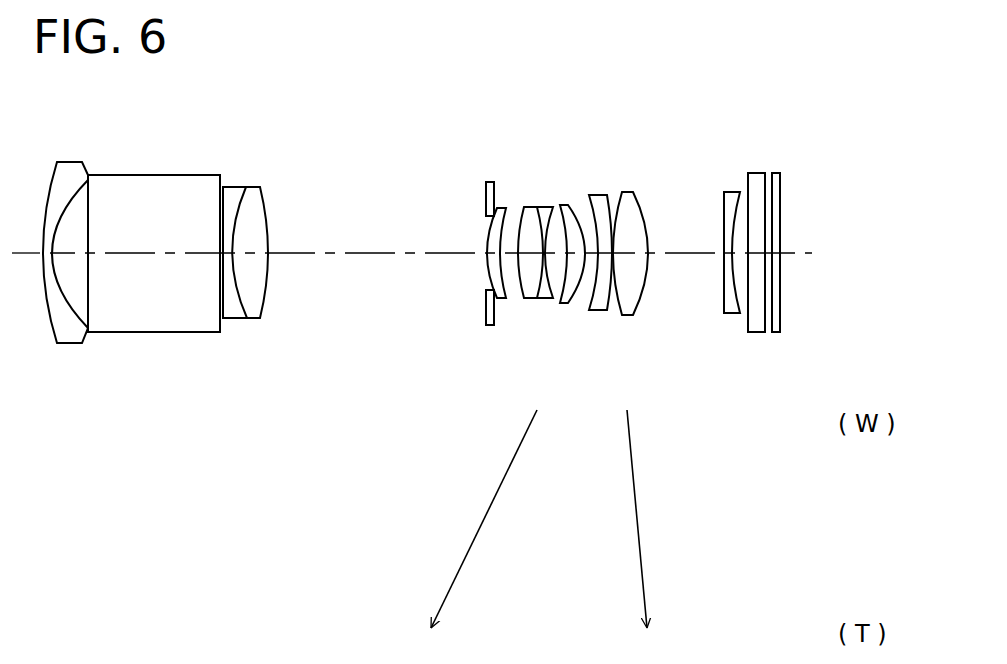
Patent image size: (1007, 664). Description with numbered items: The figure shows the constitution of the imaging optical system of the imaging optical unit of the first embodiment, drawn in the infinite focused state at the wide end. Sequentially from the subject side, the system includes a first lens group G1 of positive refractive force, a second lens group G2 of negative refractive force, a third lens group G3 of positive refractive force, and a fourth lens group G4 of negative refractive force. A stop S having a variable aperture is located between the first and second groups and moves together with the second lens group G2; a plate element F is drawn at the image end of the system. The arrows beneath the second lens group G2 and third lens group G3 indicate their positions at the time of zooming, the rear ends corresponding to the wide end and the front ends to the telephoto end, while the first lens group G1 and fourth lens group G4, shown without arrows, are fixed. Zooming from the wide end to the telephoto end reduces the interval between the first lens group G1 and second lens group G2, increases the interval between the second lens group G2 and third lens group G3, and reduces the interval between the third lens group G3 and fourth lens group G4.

The first lens group G1 is at (42, 380).
The second lens group G2 is at (485, 382).
The third lens group G3 is at (605, 382).
The fourth lens group G4 is at (723, 382).
The stop S is at (491, 236).
The filter / cover glass F is at (764, 237).